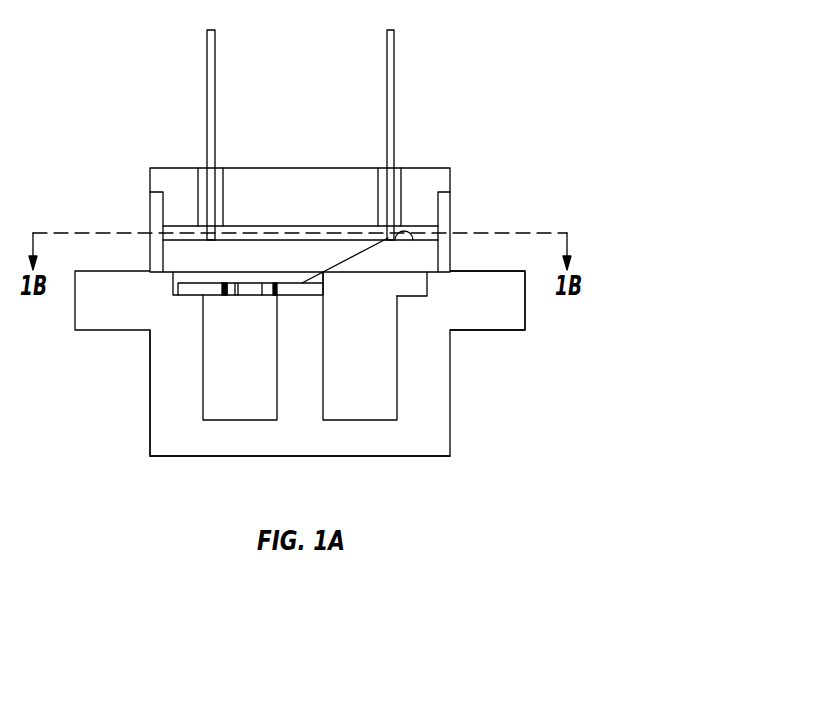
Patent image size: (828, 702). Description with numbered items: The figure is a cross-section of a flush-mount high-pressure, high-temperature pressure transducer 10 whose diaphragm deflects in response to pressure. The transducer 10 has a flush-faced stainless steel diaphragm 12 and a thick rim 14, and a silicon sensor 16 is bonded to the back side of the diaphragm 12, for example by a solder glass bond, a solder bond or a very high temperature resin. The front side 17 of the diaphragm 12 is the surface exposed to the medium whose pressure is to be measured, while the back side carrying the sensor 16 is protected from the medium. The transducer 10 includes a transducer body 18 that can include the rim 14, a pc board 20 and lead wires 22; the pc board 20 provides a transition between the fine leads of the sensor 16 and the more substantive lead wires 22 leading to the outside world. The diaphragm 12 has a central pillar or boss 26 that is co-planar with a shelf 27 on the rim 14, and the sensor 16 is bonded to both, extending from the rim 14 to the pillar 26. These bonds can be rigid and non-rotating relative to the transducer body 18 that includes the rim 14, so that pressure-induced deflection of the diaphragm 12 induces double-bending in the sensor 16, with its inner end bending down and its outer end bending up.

The pressure transducer 10 is at (572, 103).
The diaphragm 12 is at (377, 448).
The rim 14 is at (525, 297).
The silicon sensor 16 is at (253, 297).
The front side 17 is at (210, 447).
The transducer body 18 is at (158, 429).
The pc board 20 is at (170, 263).
The lead wires 22 is at (395, 75).
The central pillar 26 is at (311, 388).
The shelf 27 is at (407, 294).